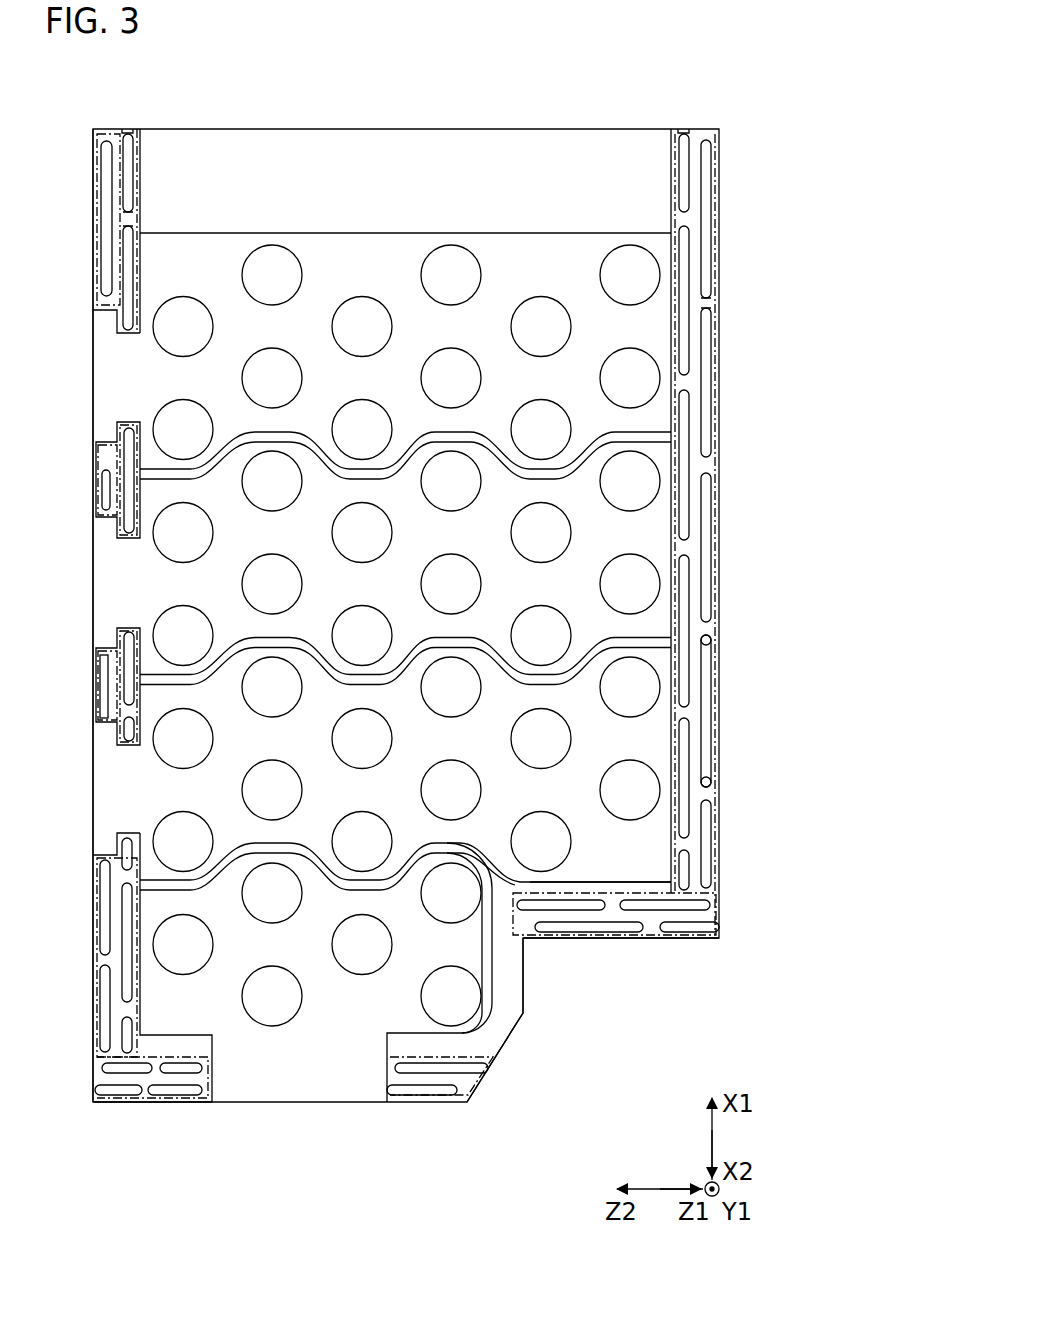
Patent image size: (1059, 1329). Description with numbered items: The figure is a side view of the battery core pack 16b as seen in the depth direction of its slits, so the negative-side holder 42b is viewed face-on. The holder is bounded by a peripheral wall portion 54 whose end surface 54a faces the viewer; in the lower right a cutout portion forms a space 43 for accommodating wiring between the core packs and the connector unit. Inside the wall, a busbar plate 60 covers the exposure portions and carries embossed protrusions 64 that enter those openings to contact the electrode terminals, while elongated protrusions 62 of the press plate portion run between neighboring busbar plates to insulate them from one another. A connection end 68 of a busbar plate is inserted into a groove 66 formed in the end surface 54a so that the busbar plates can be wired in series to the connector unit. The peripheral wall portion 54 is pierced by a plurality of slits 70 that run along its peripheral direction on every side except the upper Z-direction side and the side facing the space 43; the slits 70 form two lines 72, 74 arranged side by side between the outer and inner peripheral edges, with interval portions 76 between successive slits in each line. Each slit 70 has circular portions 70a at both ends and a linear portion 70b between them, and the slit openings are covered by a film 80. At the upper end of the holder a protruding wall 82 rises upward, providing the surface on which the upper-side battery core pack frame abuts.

The battery core pack 16b is at (704, 42).
The negative-side holder 42b is at (695, 950).
The space 43 is at (560, 990).
The peripheral wall portion 54 is at (171, 1103).
The end surface 54a is at (123, 1078).
The busbar plate 60 is at (212, 245).
The elongated protrusion 62 is at (363, 890).
The protrusion 64 is at (278, 262).
The groove 66 is at (100, 313).
The connection end 68 is at (100, 381).
The slit 70 is at (128, 170).
The circular portion 70a is at (706, 641).
The linear portion 70b is at (706, 703).
The line 72 is at (104, 124).
The line 74 is at (129, 124).
The interval portion 76 is at (128, 217).
The film 80 is at (672, 178).
The protruding wall 82 is at (480, 128).